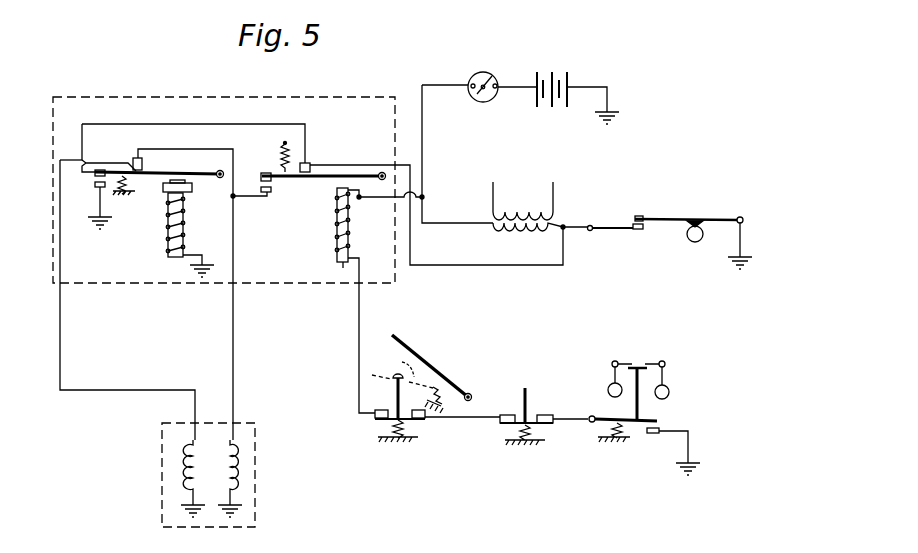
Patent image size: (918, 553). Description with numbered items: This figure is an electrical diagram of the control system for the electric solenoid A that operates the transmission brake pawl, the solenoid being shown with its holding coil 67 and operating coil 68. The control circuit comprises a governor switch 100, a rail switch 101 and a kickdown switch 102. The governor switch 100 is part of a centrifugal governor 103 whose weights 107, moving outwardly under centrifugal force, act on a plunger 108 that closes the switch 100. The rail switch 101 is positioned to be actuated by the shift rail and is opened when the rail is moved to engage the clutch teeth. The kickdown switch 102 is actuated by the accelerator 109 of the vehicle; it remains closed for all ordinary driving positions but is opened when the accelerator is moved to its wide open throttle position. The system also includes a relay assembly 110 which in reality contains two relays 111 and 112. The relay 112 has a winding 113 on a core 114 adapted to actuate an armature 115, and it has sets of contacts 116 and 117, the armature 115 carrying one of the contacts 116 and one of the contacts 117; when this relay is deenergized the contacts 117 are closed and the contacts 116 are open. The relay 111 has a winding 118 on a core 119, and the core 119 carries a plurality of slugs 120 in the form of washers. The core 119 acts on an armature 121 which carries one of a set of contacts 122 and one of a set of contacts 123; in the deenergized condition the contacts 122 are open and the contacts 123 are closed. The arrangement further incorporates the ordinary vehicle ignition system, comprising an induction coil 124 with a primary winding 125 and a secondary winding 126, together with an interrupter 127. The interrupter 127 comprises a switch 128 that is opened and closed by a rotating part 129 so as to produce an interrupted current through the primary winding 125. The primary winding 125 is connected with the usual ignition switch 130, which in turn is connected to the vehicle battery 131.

The relay assembly 110 is at (121, 98).
The contacts 123 is at (134, 158).
The armature 121 is at (178, 173).
The contacts 122 is at (95, 185).
The slugs 120 is at (166, 189).
The winding 118 is at (190, 228).
The relay 111 is at (177, 231).
The core 119 is at (186, 269).
The contacts 116 is at (256, 179).
The contacts 117 is at (304, 163).
The armature 115 is at (372, 172).
The relay 112 is at (316, 203).
The winding 113 is at (349, 240).
The core 114 is at (340, 262).
The ignition switch 130 is at (496, 73).
The vehicle battery 131 is at (558, 66).
The induction coil 124 is at (524, 201).
The secondary winding 126 is at (492, 203).
The primary winding 125 is at (537, 233).
The switch 128 is at (628, 220).
The interrupter 127 is at (679, 253).
The rotating part 129 is at (698, 243).
The accelerator 109 is at (442, 358).
The kickdown switch 102 is at (426, 420).
The rail switch 101 is at (532, 412).
The plunger 108 is at (631, 408).
The weights 107 is at (609, 387).
The centrifugal governor 103 is at (659, 371).
The governor switch 100 is at (657, 392).
The electric solenoid A is at (160, 428).
The operating coil 68 is at (187, 472).
The holding coil 67 is at (235, 473).